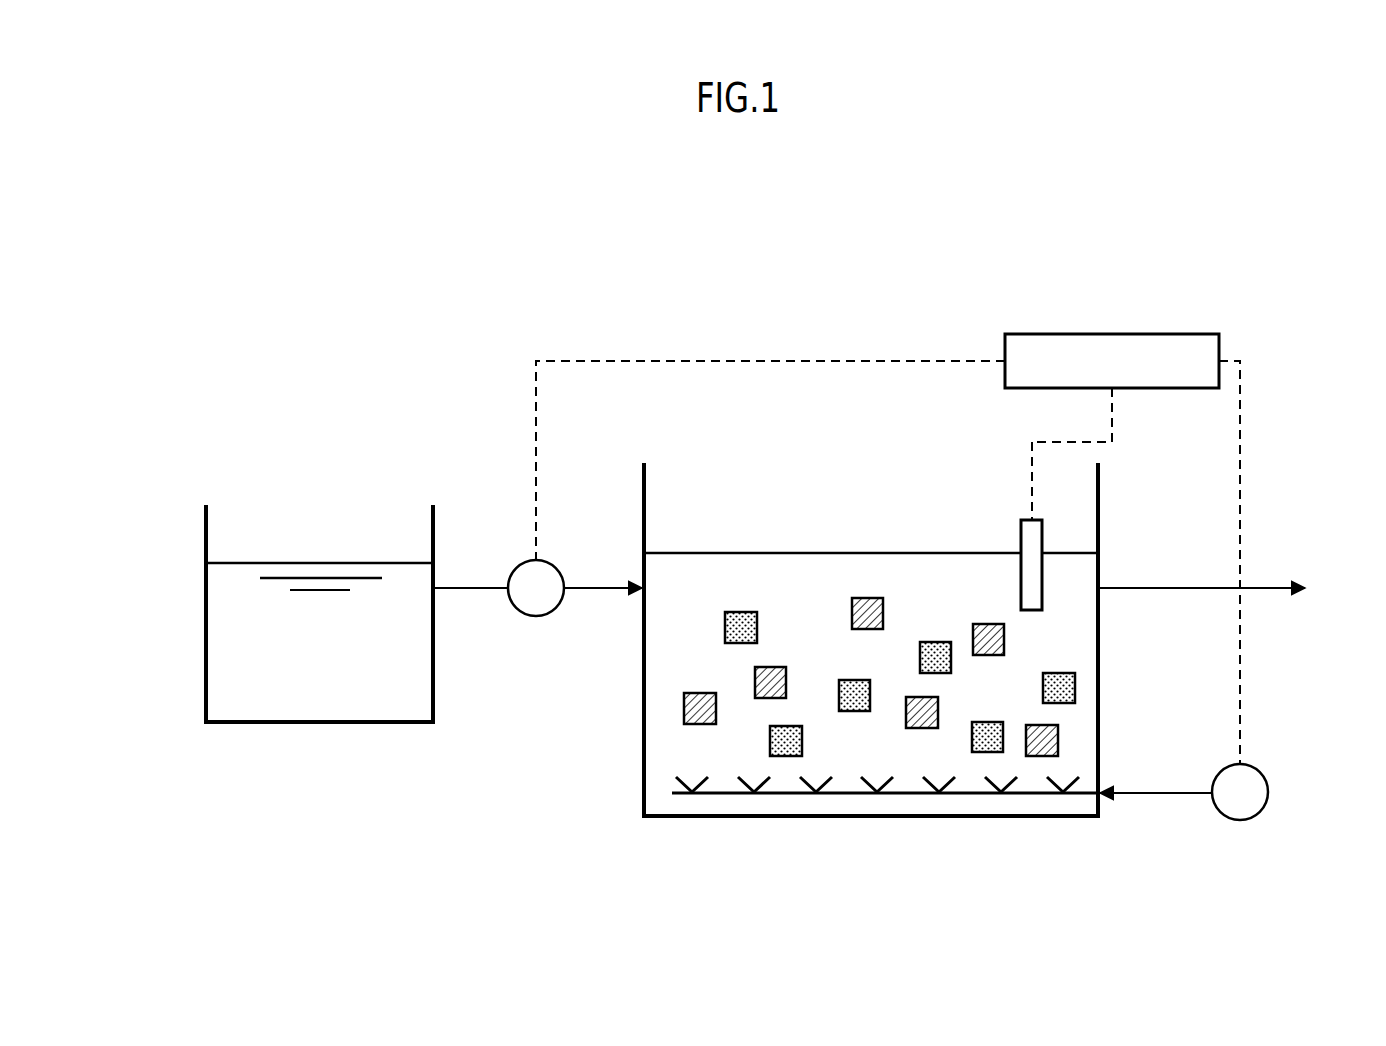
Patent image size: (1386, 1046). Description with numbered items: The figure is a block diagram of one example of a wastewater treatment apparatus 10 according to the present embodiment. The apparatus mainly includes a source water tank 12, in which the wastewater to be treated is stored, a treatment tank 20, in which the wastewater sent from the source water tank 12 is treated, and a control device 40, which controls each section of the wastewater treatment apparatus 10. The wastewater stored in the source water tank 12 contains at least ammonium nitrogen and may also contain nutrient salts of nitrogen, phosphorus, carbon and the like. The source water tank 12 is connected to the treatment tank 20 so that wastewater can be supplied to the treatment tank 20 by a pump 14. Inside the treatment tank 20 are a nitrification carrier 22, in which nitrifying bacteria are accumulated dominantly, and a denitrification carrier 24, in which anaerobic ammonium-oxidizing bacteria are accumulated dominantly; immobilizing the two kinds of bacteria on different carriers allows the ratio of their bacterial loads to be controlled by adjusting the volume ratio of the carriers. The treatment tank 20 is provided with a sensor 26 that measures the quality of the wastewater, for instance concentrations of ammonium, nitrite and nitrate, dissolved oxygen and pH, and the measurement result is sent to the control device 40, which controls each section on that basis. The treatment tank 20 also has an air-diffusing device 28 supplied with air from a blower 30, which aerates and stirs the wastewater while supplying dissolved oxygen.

The wastewater treatment apparatus 10 is at (1350, 220).
The source water tank 12 is at (206, 665).
The pump 14 is at (536, 617).
The treatment tank 20 is at (706, 816).
The nitrification carrier 22 is at (684, 710).
The denitrification carrier 24 is at (1075, 688).
The sensor 26 is at (1042, 540).
The air-diffusing device 28 is at (850, 795).
The blower 30 is at (1241, 820).
The control device 40 is at (1113, 334).